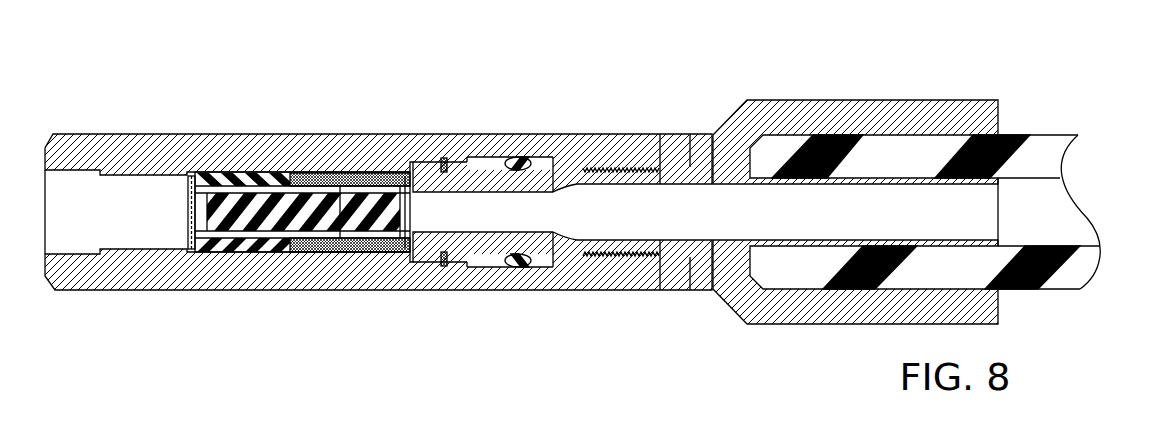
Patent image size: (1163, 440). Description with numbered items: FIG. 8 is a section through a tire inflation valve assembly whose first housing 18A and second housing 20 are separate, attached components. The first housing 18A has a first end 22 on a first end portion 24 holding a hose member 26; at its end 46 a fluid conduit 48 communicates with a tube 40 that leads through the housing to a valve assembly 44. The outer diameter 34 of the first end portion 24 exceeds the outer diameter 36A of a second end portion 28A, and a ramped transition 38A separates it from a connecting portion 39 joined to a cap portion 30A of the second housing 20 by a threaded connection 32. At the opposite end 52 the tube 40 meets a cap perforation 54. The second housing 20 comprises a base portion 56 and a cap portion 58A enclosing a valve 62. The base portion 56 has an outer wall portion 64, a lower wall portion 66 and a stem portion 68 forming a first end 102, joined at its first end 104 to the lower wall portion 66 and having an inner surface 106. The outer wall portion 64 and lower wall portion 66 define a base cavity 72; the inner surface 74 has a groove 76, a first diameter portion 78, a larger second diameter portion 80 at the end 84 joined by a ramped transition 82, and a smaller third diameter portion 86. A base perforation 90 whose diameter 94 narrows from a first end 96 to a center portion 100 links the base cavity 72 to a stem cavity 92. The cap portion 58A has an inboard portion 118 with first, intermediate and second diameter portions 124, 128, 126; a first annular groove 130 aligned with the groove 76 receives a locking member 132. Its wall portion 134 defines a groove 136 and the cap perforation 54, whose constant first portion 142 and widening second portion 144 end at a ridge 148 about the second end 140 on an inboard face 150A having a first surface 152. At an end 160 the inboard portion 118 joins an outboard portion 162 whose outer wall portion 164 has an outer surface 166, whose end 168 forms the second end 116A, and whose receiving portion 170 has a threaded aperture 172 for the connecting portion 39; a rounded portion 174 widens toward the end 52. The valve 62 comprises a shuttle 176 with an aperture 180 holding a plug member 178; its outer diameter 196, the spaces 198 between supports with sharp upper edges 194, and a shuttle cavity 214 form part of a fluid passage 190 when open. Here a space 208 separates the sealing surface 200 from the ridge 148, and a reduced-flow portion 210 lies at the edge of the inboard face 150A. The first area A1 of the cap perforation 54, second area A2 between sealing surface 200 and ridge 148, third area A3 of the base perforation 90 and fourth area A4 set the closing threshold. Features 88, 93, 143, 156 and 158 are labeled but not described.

The second housing 20 is at (538, 135).
The first end 22 is at (998, 112).
The first end portion 24 is at (965, 100).
The hose member 26 is at (1046, 290).
The first housing 18A is at (895, 135).
The second end portion 28A is at (668, 135).
The cap portion 30A is at (607, 135).
The threaded connection 32 is at (645, 135).
The outer diameter 34 is at (818, 100).
The outer diameter 36A is at (690, 135).
The ramped transition 38A is at (727, 120).
The connecting portion 39 is at (710, 270).
The tube 40 is at (1020, 182).
The valve assembly 44 is at (230, 265).
The end 46 is at (758, 300).
The fluid conduit 48 is at (1067, 215).
The opposite end 52 is at (610, 262).
The cap perforation 54 is at (577, 135).
The base portion 56 is at (80, 292).
The cap portion 58A is at (655, 262).
The valve 62 is at (202, 262).
The outer wall portion 64 is at (320, 260).
The lower wall portion 66 is at (176, 253).
The stem portion 68 is at (277, 150).
The base cavity 72 is at (303, 257).
The inner surface 74 is at (360, 257).
The groove 76 is at (488, 265).
The first diameter portion 78 is at (470, 262).
The second diameter portion 80 is at (520, 265).
The ramped transition 82 is at (505, 262).
The end 84 is at (555, 262).
The third diameter portion 86 is at (280, 262).
The plate 88 is at (190, 253).
The base perforation 90 is at (187, 233).
The stem cavity 92 is at (133, 170).
The plate 93 is at (187, 180).
The diameter 94 is at (185, 193).
The first end 96 is at (197, 177).
The center portion 100 is at (187, 192).
The first end 102 is at (42, 275).
The first end 104 is at (168, 256).
The inner surface 106 is at (108, 168).
The second end 116A is at (728, 305).
The inboard portion 118 is at (483, 135).
The first diameter portion 124 is at (453, 135).
The second diameter portion 126 is at (513, 135).
The intermediate diameter portion 128 is at (490, 135).
The first annular groove 130 is at (540, 245).
The locking member 132 is at (445, 135).
The wall portion 134 is at (460, 262).
The groove 136 is at (390, 135).
The second end 140 is at (342, 135).
The first portion 142 is at (557, 135).
The passage wall 143 is at (418, 232).
The second portion 144 is at (350, 135).
The ridge 148 is at (413, 258).
The inboard face 150A is at (443, 265).
The first surface 152 is at (410, 135).
The body 156 is at (575, 262).
The body wall 158 is at (537, 265).
The end 160 is at (583, 135).
The outboard portion 162 is at (630, 135).
The outer wall portion 164 is at (630, 262).
The outer surface 166 is at (670, 265).
The end 168 is at (707, 240).
The receiving portion 170 is at (700, 262).
The aperture 172 is at (650, 247).
The rounded portion 174 is at (595, 262).
The shuttle 176 is at (230, 193).
The plug member 178 is at (257, 177).
The aperture 180 is at (343, 257).
The fluid passage 190 is at (297, 177).
The upper edge 194 is at (293, 260).
The outer diameter 196 is at (305, 185).
The spaces 198 is at (213, 177).
The sealing surface 200 is at (262, 262).
The space 208 is at (390, 255).
The portion 210 is at (367, 135).
The shuttle cavity 214 is at (220, 265).
The first area A1 is at (452, 212).
The second area A2 is at (375, 245).
The third area A3 is at (187, 212).
The fourth area A4 is at (409, 215).